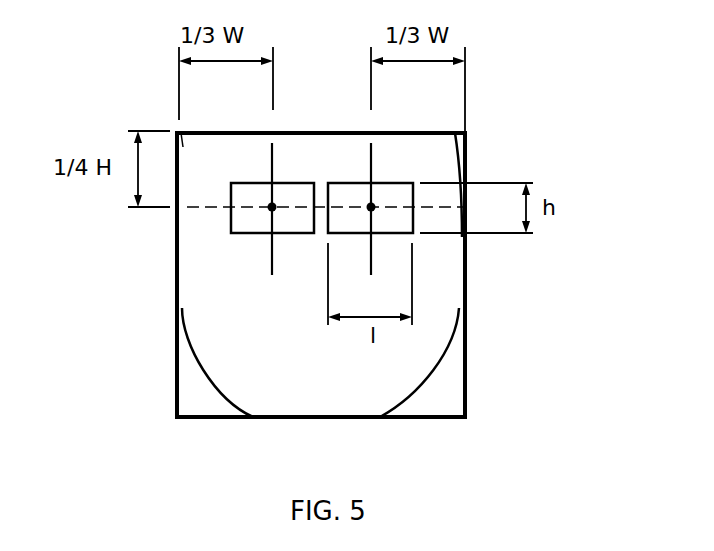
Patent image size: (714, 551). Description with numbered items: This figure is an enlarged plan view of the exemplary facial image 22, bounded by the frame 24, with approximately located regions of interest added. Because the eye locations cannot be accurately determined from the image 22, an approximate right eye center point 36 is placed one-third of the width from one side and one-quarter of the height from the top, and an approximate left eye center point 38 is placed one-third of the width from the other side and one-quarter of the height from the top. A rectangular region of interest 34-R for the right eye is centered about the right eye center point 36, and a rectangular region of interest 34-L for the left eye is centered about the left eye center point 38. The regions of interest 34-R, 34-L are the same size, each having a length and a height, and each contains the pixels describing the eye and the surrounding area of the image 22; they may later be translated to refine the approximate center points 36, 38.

The facial image 22 is at (205, 380).
The housing 24 is at (479, 389).
The region of interest for the right eye 34-R is at (231, 233).
The region of interest for the left eye 34-L is at (413, 233).
The right eye center point 36 is at (272, 207).
The left eye center point 38 is at (371, 207).